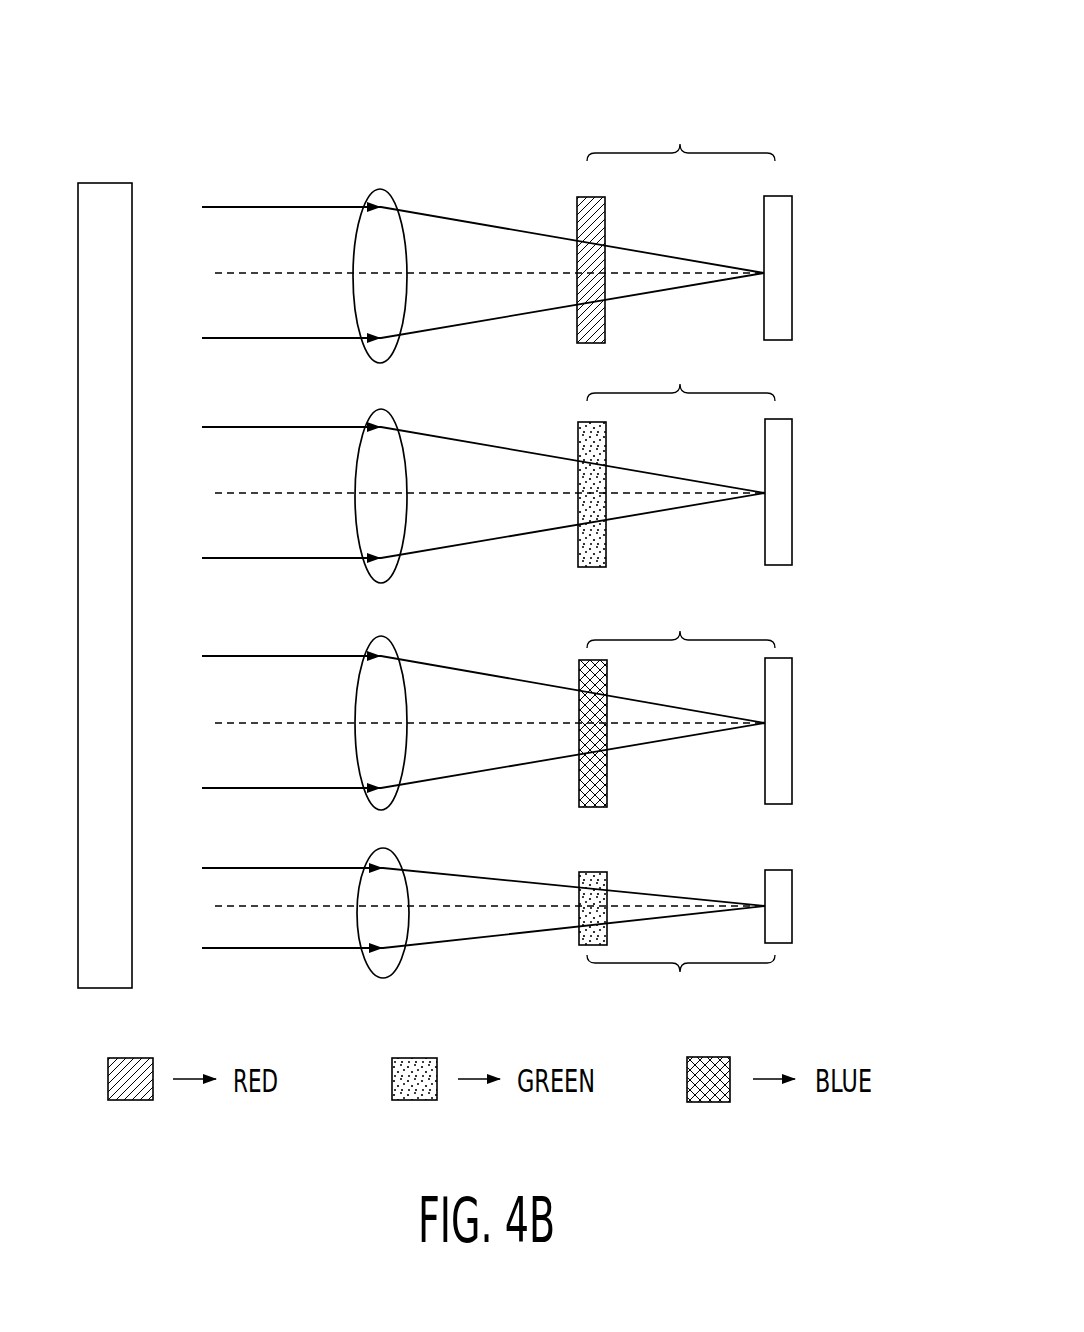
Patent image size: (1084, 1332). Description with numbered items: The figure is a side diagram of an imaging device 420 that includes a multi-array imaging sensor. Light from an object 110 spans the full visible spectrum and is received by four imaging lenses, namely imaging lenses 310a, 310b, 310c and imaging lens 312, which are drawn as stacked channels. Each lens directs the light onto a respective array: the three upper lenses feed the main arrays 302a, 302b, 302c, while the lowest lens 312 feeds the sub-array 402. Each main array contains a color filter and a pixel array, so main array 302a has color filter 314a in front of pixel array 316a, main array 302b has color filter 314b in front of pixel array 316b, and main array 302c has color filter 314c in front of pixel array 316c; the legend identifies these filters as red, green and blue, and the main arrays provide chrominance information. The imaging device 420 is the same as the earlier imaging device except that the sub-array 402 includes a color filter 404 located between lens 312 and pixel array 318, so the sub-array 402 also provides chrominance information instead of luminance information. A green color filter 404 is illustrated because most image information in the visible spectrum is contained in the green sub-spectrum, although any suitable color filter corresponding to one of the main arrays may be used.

The imaging device 420 is at (543, 99).
The object 110 is at (104, 183).
The imaging lens 310a is at (390, 189).
The imaging lens 310b is at (372, 574).
The imaging lens 310c is at (395, 641).
The imaging lens 312 is at (394, 853).
The color filter 314a is at (577, 240).
The color filter 314b is at (578, 445).
The color filter 314c is at (578, 680).
The pixel array 316a is at (793, 213).
The pixel array 316b is at (793, 455).
The pixel array 316c is at (793, 700).
The pixel array 318 is at (793, 878).
The main array 302a is at (681, 135).
The main array 302b is at (681, 375).
The main array 302c is at (681, 622).
The sub-array 402 is at (681, 985).
The color filter 404 is at (607, 878).